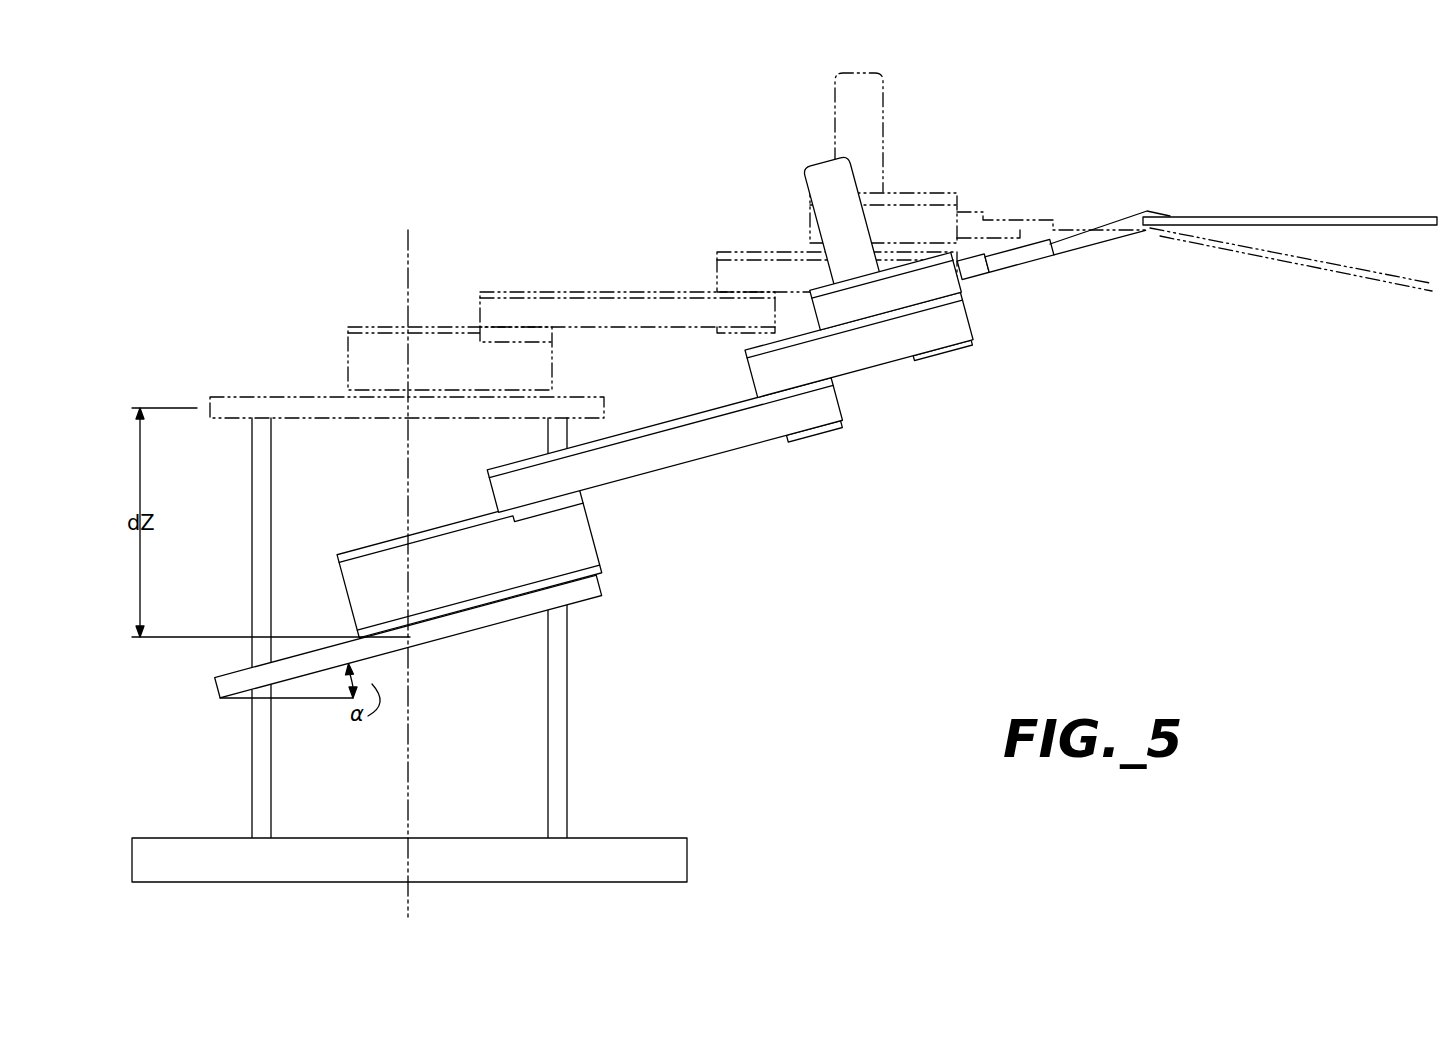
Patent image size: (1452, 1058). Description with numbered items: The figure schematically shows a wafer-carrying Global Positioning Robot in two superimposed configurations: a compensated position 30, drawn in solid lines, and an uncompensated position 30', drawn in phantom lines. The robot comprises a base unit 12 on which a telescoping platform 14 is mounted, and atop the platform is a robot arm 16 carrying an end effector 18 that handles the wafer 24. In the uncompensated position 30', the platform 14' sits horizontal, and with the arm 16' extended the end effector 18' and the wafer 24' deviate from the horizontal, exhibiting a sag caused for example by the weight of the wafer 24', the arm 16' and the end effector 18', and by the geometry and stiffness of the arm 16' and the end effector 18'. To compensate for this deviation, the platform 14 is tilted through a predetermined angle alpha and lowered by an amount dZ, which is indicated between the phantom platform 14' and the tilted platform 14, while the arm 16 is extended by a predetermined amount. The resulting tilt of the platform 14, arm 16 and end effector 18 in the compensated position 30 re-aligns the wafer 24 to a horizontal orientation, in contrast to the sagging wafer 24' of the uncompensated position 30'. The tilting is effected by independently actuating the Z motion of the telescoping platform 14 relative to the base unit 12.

The base unit 12 is at (207, 837).
The telescoping platform 14 is at (382, 636).
The platform in uncompensated position 14' is at (407, 388).
The robot arm 16 is at (665, 448).
The robot arm in uncompensated position 16' is at (561, 322).
The end effector 18 is at (1063, 250).
The end effector in uncompensated position 18' is at (1057, 206).
The wafer 24 is at (1290, 201).
The wafer in uncompensated position 24' is at (1291, 259).
The compensated position 30 is at (839, 283).
The uncompensated position 30' is at (757, 182).